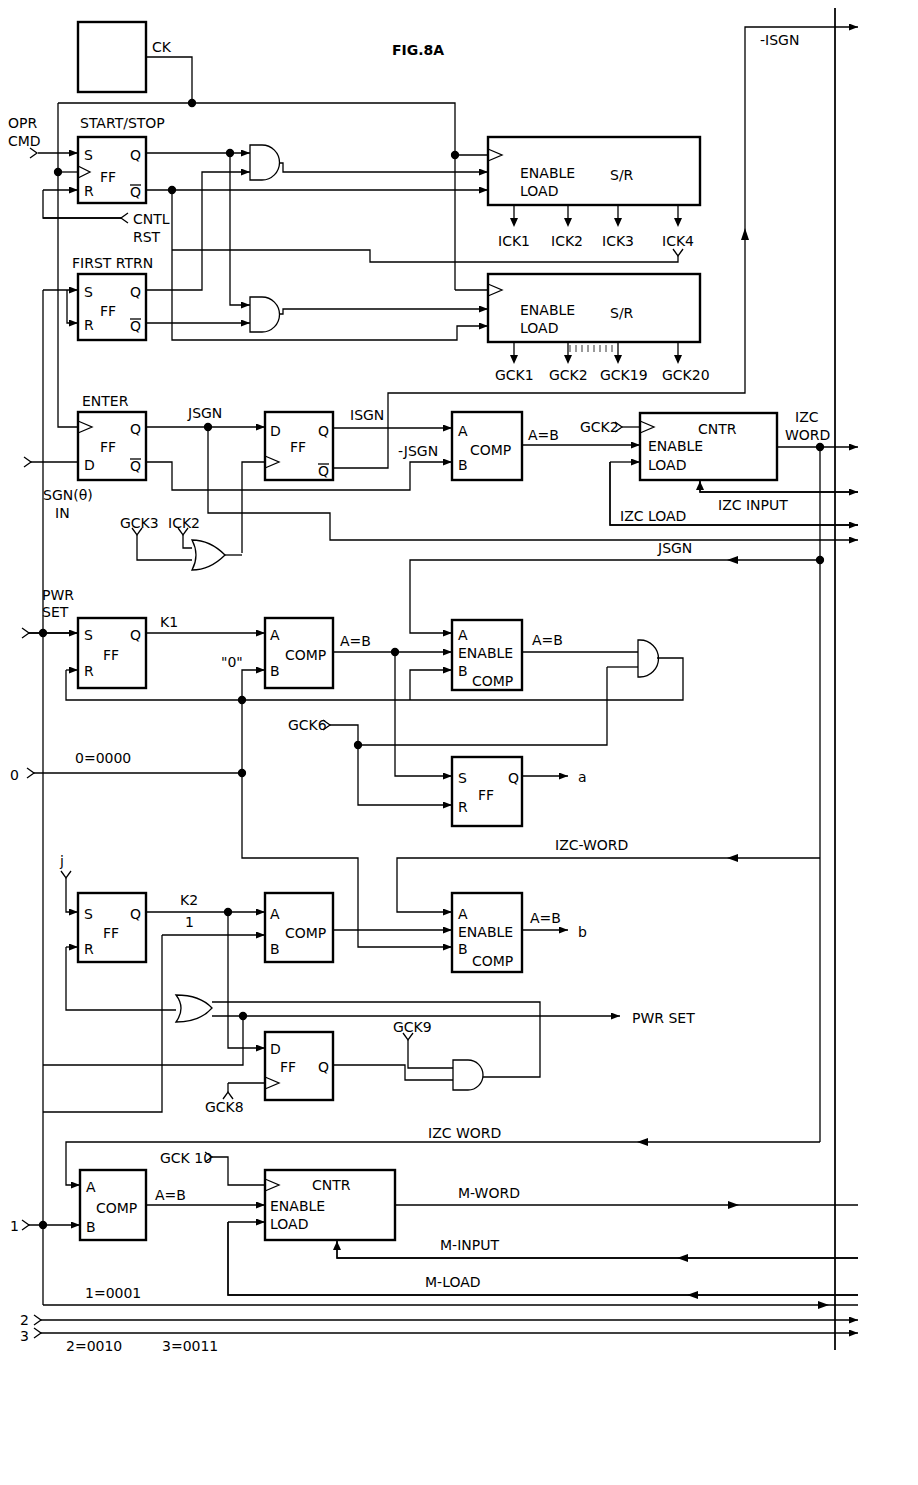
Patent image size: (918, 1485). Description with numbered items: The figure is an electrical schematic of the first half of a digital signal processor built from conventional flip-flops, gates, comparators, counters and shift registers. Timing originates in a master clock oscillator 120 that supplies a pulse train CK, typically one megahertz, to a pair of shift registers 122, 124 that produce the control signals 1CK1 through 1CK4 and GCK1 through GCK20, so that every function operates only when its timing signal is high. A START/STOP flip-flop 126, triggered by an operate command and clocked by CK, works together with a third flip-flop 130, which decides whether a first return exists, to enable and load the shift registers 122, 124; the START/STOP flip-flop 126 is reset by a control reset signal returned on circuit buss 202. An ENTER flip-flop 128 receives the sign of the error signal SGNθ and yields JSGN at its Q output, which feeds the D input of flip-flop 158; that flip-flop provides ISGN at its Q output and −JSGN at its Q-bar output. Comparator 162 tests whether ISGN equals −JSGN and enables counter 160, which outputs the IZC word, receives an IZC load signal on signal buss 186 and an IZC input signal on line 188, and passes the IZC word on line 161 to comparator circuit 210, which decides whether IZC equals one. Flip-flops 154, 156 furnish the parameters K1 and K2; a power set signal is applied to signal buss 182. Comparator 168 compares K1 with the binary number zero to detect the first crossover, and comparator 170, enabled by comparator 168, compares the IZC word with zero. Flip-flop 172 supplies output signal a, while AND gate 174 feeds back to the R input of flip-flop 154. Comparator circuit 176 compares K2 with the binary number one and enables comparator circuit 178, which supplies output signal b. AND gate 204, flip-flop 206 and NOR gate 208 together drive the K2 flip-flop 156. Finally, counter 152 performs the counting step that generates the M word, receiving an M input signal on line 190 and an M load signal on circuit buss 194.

The master clock oscillator 120 is at (76, 44).
The START/STOP flip-flop 126 is at (148, 147).
The circuit buss 202 is at (76, 219).
The shift register 122 is at (580, 135).
The shift register 124 is at (690, 272).
The third flip-flop 130 is at (128, 342).
The ENTER flip-flop 128 is at (148, 416).
The flip-flop 158 is at (302, 411).
The comparator 162 is at (522, 480).
The counter 160 is at (760, 410).
The line 161 is at (834, 412).
The line 188 is at (786, 492).
The signal buss 186 is at (610, 508).
The flip-flop 154 is at (108, 618).
The signal buss 182 is at (50, 633).
The comparator 168 is at (320, 618).
The comparator 170 is at (524, 628).
The AND gate 174 is at (646, 642).
The flip-flop 172 is at (524, 770).
The flip-flop 156 is at (110, 893).
The comparator circuit 176 is at (268, 890).
The comparator circuit 178 is at (498, 893).
The NOR gate 208 is at (202, 978).
The flip-flop 206 is at (335, 1046).
The AND gate 204 is at (482, 1090).
The comparator circuit 210 is at (124, 1244).
The counter 152 is at (400, 1178).
The circuit buss 194 is at (286, 1288).
The line 190 is at (612, 1258).